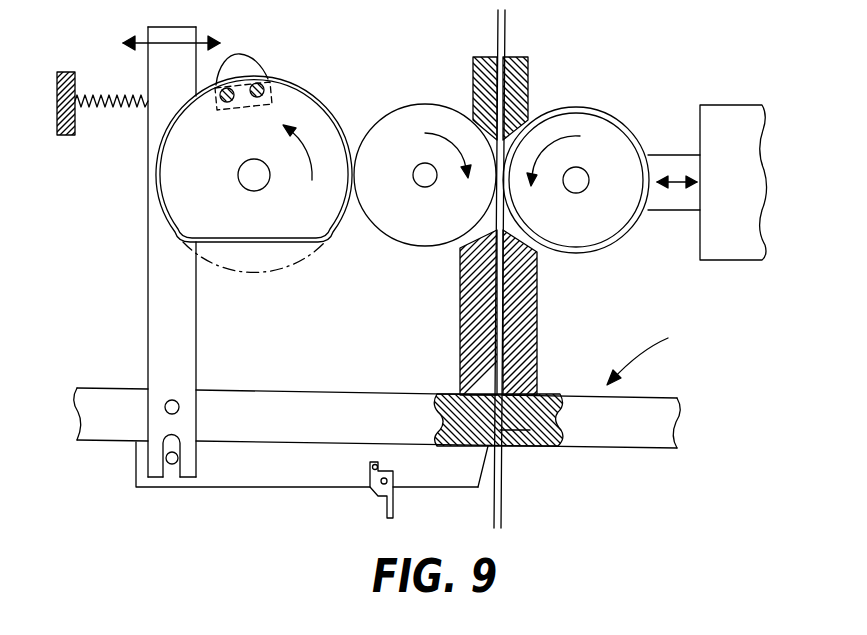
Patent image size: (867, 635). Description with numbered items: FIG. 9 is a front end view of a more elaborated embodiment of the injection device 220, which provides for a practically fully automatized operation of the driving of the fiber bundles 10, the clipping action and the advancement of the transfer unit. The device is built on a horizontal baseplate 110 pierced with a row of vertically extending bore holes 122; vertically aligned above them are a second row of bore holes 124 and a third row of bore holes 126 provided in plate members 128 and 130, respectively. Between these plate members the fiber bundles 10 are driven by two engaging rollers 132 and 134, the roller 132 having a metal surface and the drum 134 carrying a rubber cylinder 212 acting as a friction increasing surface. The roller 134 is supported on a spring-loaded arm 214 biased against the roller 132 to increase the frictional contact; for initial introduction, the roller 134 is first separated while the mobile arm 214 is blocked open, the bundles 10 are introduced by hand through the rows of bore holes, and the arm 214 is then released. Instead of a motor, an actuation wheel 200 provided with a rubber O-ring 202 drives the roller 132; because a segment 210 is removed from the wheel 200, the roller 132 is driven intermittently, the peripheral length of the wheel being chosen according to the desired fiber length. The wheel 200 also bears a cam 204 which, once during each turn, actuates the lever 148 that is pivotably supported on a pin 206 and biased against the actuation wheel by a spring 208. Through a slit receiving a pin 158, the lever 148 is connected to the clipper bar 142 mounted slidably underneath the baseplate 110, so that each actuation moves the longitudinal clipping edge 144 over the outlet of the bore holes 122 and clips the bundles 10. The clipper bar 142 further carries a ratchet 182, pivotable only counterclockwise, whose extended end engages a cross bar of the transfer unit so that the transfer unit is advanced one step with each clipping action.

The fiber bundle 10 is at (505, 21).
The baseplate 110 is at (628, 446).
The bore hole 122 is at (530, 432).
The bore hole 124 is at (492, 313).
The bore hole 126 is at (528, 86).
The plate member 128 is at (470, 358).
The plate member 130 is at (475, 81).
The roller 132 is at (377, 128).
The roller 134 is at (612, 137).
The clipper bar 142 is at (278, 487).
The clipping edge 144 is at (487, 477).
The lever 148 is at (155, 305).
The pin 158 is at (172, 466).
The ratchet 182 is at (385, 500).
The actuation wheel 200 is at (237, 228).
The rubber O-ring 202 is at (340, 225).
The cam 204 is at (246, 63).
The pin 206 is at (180, 406).
The spring 208 is at (117, 110).
The segment 210 is at (292, 262).
The rubber cylinder 212 is at (588, 250).
The spring-loaded arm 214 is at (676, 203).
The injection device 220 is at (659, 352).